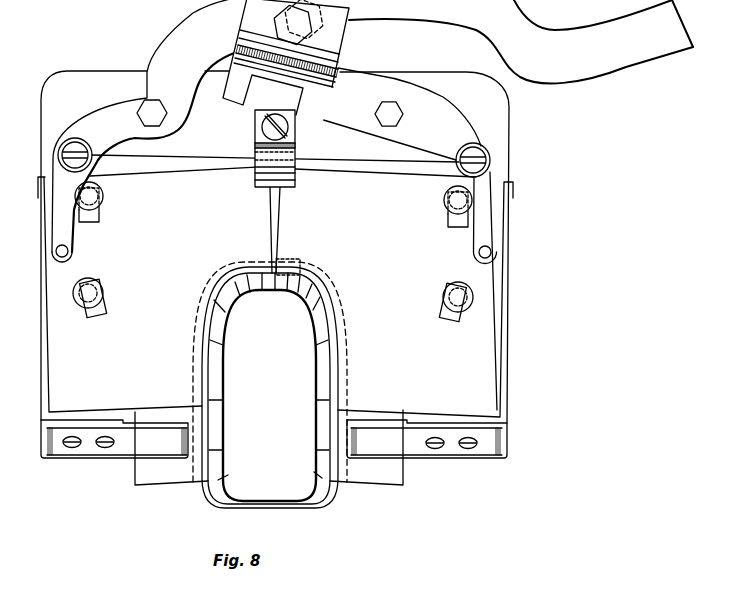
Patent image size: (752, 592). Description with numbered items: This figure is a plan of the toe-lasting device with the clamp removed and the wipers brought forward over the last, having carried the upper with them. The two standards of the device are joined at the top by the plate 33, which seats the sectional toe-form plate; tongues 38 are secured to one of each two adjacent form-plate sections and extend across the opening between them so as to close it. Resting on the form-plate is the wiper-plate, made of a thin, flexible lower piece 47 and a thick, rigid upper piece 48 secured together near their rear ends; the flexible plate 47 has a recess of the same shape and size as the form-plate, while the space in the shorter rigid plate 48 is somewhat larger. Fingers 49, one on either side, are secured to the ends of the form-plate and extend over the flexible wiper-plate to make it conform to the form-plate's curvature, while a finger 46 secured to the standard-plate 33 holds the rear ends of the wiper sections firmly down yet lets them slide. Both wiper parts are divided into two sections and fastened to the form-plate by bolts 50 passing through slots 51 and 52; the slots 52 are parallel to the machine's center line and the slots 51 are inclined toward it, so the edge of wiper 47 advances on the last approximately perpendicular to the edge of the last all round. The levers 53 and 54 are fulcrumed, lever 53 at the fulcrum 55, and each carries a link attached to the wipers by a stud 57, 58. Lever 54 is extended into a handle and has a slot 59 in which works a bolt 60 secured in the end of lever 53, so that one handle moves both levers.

The plate 33 is at (275, 247).
The tongues 38 is at (289, 261).
The finger 46 is at (261, 191).
The flexible wiper-plate 47 is at (269, 447).
The rigid wiper-plate 48 is at (275, 297).
The fingers 49 is at (274, 450).
The bolts 50 is at (103, 196).
The slots 51 is at (273, 310).
The slots 52 is at (101, 218).
The lever 53 is at (389, 114).
The lever 54 is at (372, 126).
The fulcrum 55 is at (137, 117).
The stud 57 is at (55, 251).
The stud 58 is at (496, 252).
The slot 59 is at (309, 26).
The bolt 60 is at (281, 22).